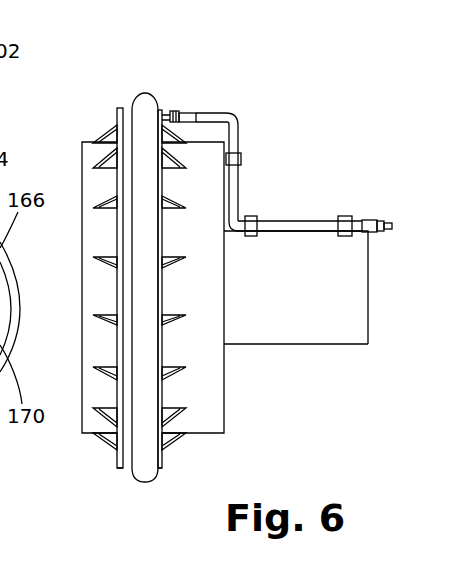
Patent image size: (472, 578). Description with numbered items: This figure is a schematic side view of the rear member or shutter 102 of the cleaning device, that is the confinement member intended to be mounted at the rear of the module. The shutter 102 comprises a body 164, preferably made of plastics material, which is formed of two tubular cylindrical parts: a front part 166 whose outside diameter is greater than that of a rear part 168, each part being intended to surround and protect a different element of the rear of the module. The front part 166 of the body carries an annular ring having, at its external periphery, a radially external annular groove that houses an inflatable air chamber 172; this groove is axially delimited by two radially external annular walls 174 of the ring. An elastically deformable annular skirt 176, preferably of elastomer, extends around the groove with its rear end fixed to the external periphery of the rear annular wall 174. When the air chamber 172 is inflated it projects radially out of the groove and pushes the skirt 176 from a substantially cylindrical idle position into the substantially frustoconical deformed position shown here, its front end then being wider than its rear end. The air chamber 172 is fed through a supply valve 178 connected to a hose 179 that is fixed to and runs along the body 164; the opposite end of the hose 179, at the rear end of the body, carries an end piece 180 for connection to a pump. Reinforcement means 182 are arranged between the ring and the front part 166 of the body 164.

The rear member or shutter 102 is at (300, 92).
The body 164 is at (270, 350).
The front part 166 is at (198, 413).
The rear part 168 is at (328, 328).
The inflatable air chamber 172 is at (124, 108).
The radially external annular walls 174 is at (120, 469).
The elastically deformable annular skirt 176 is at (143, 115).
The supply valve 178 is at (170, 111).
The hose 179 is at (290, 221).
The end piece 180 is at (386, 220).
The reinforcement means 182 is at (115, 258).